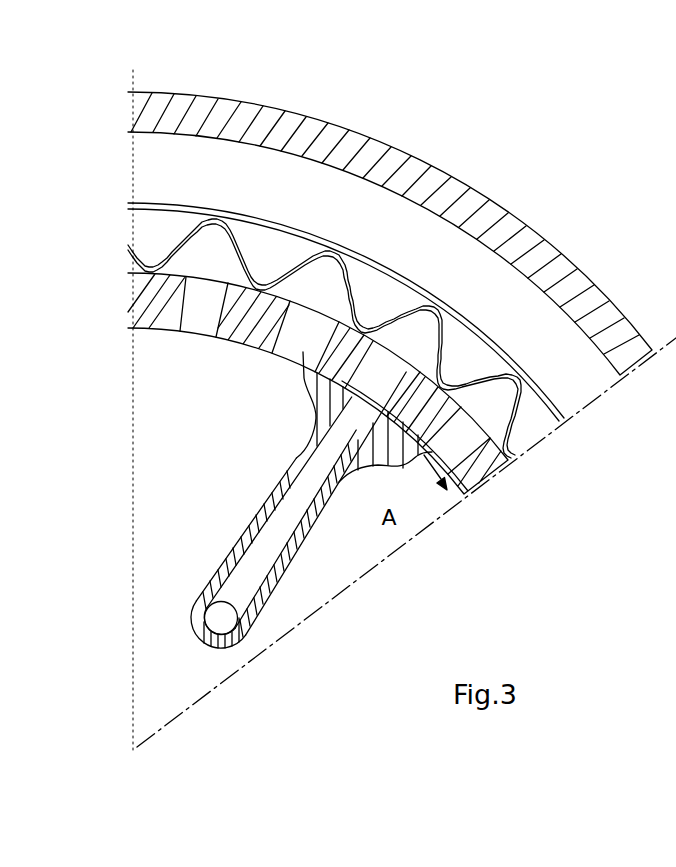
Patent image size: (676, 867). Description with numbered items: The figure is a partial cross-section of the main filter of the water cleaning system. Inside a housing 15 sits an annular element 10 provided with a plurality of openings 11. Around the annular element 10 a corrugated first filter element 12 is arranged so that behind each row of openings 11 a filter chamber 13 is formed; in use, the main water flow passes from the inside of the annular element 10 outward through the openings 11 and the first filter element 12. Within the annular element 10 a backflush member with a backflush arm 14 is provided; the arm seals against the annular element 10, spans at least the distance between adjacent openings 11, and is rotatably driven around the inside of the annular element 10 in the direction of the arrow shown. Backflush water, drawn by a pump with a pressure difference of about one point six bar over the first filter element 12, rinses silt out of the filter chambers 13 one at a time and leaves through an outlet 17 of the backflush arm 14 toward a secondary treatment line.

The annular element 10 is at (478, 468).
The openings 11 is at (194, 315).
The corrugated first filter element 12 is at (512, 420).
The filter chamber 13 is at (199, 268).
The backflush arm 14 is at (313, 530).
The housing 15 is at (621, 353).
The outlet of the backflush arm 17 is at (223, 625).